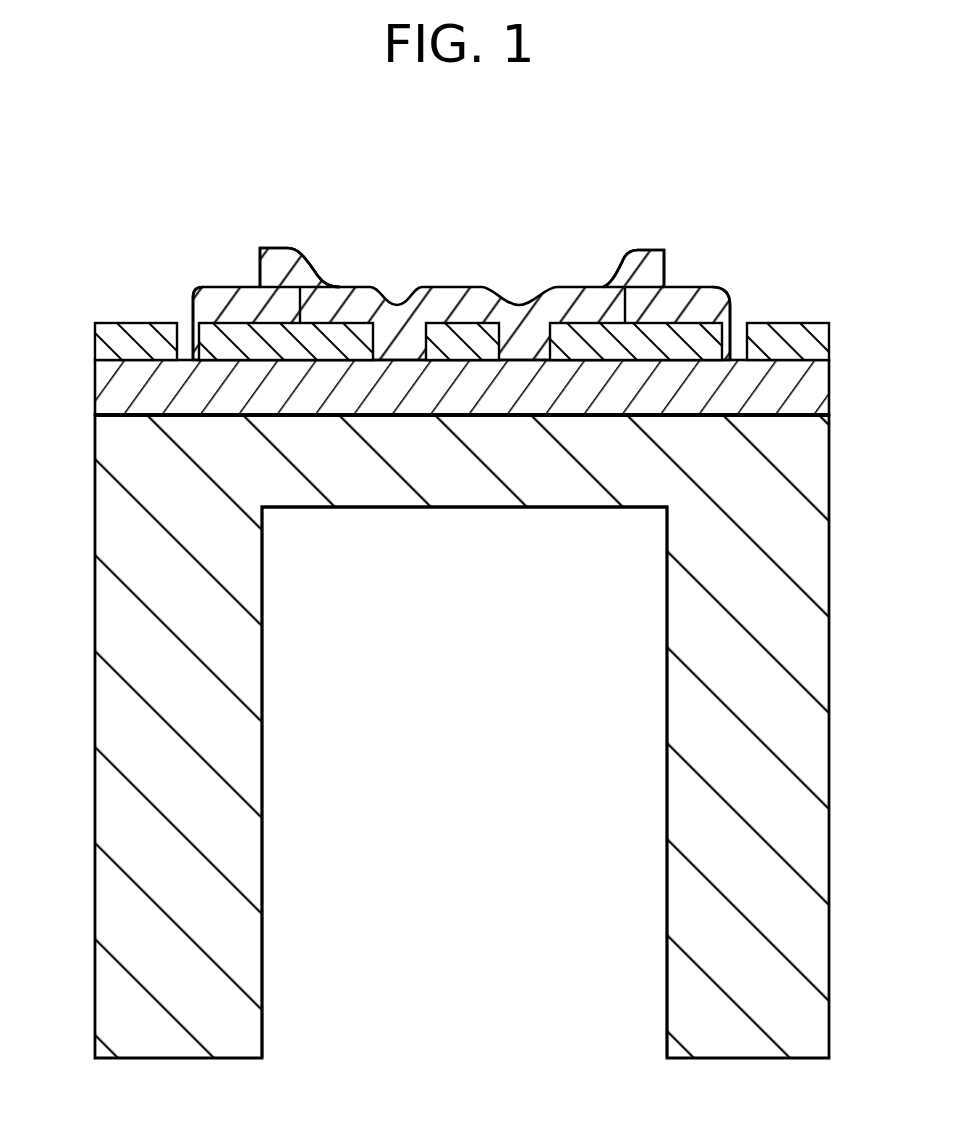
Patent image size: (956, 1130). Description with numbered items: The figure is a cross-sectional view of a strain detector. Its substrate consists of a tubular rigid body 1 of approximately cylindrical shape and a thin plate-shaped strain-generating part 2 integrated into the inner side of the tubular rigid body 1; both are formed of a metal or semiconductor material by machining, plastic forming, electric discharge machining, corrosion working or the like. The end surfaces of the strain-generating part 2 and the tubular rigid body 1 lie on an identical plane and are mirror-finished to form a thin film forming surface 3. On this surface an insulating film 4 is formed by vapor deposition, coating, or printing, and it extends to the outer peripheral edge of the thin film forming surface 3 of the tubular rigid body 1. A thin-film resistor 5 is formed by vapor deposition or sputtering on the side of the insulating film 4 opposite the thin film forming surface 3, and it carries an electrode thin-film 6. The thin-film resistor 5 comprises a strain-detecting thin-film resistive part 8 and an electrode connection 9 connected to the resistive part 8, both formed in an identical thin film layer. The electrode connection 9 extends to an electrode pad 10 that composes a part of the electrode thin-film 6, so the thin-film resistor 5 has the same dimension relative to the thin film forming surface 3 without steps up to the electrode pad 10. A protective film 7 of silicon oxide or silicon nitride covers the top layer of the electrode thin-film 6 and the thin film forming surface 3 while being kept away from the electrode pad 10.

The tubular rigid body 1 is at (243, 672).
The strain-generating part 2 is at (537, 492).
The thin film forming surface 3 is at (765, 414).
The insulating film 4 is at (110, 400).
The thin-film resistor 5 is at (213, 333).
The electrode thin-film 6 is at (283, 300).
The protective film 7 is at (119, 332).
The strain-detecting thin-film resistive part 8 is at (370, 317).
The electrode connection 9 is at (353, 327).
The electrode pad 10 is at (228, 298).